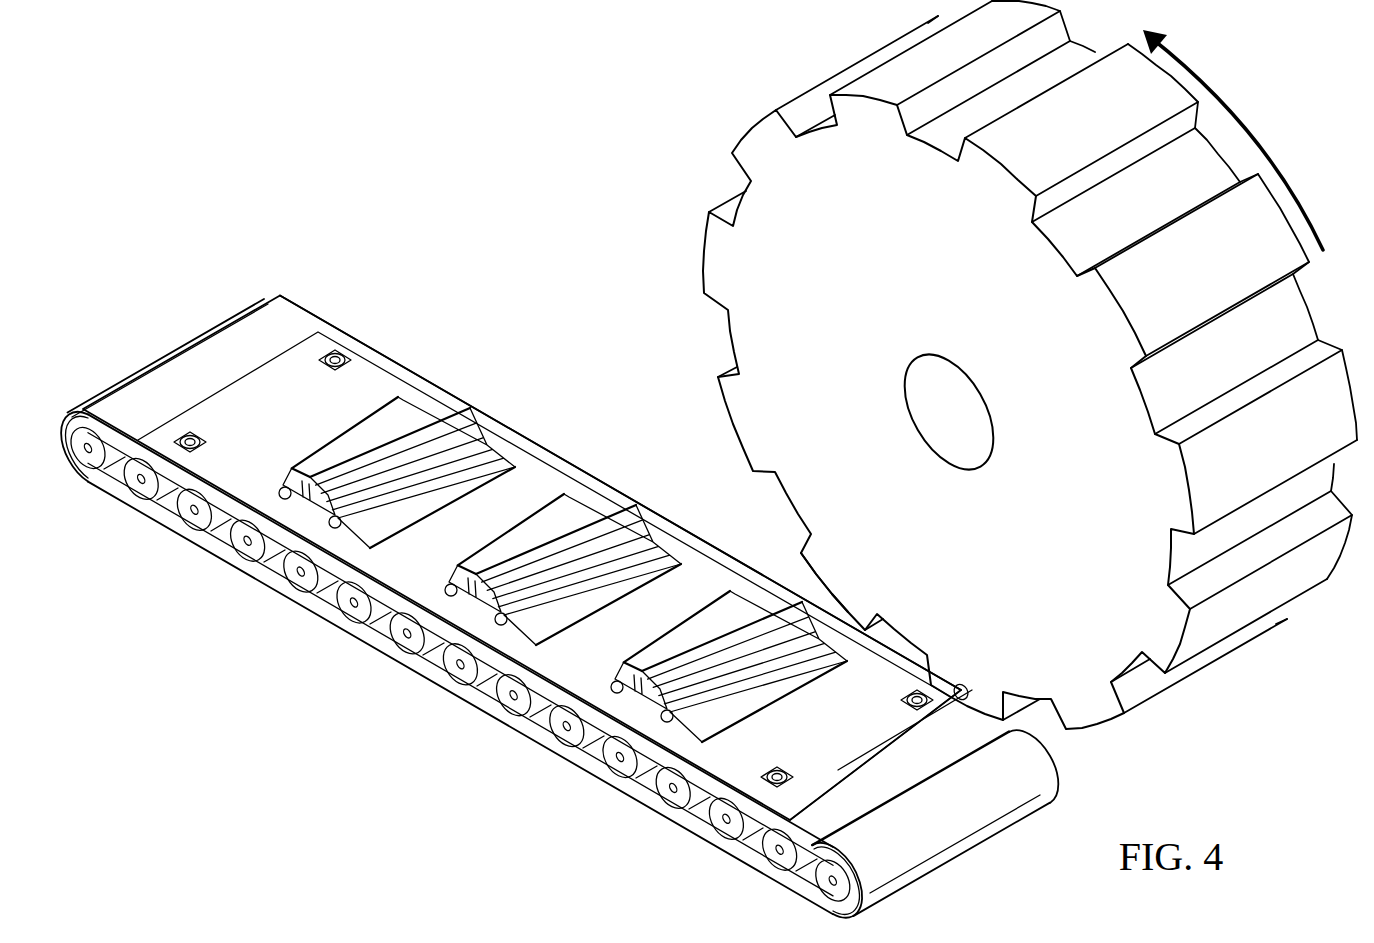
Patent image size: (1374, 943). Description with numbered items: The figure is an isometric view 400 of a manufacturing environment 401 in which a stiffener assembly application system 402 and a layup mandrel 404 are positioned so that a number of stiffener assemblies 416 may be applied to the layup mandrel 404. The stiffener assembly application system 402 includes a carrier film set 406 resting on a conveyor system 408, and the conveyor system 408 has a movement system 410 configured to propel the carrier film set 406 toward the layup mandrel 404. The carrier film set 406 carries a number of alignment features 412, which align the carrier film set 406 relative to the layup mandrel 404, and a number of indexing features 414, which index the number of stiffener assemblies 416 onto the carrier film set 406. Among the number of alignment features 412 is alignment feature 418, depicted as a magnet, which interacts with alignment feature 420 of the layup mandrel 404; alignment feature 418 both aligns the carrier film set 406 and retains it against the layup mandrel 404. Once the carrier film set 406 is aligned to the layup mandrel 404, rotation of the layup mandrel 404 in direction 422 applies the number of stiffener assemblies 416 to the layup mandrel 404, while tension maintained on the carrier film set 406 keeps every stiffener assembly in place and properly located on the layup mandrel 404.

The view 400 is at (453, 100).
The manufacturing environment 401 is at (182, 126).
The stiffener assembly application system 402 is at (221, 284).
The layup mandrel 404 is at (702, 250).
The carrier film set 406 is at (403, 366).
The conveyor system 408 is at (1034, 828).
The movement system 410 is at (611, 808).
The number of alignment features 412 is at (836, 778).
The number of indexing features 414 is at (707, 582).
The number of stiffener assemblies 416 is at (793, 590).
The alignment feature 418 is at (893, 740).
The alignment feature 420 is at (962, 688).
The direction 422 is at (1258, 135).